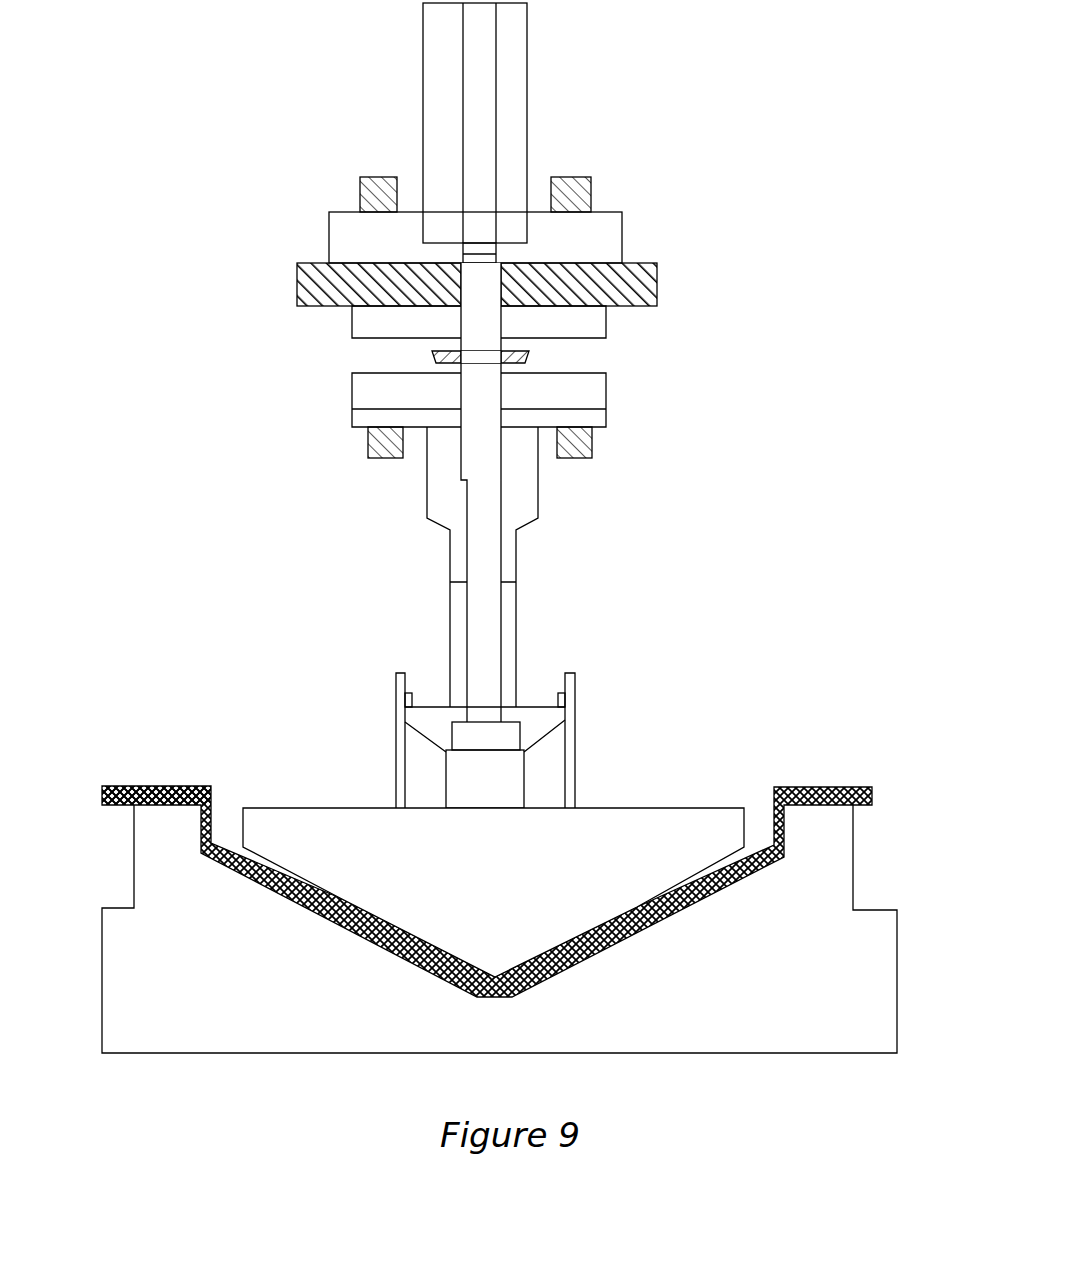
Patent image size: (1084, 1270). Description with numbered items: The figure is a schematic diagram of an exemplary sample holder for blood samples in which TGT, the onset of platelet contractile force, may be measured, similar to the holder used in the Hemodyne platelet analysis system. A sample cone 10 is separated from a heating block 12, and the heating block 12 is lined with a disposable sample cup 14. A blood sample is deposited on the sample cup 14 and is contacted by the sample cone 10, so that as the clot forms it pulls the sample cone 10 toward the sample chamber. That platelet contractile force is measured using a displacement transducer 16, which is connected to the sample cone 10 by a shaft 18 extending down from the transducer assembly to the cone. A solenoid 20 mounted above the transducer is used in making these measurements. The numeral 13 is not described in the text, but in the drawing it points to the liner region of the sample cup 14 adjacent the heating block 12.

The sample cone 10 is at (323, 806).
The heating block 12 is at (778, 1013).
The liner 13 is at (762, 842).
The disposable sample cup 14 is at (171, 784).
The displacement transducer 16 is at (537, 360).
The shaft 18 is at (517, 600).
The solenoid 20 is at (522, 33).